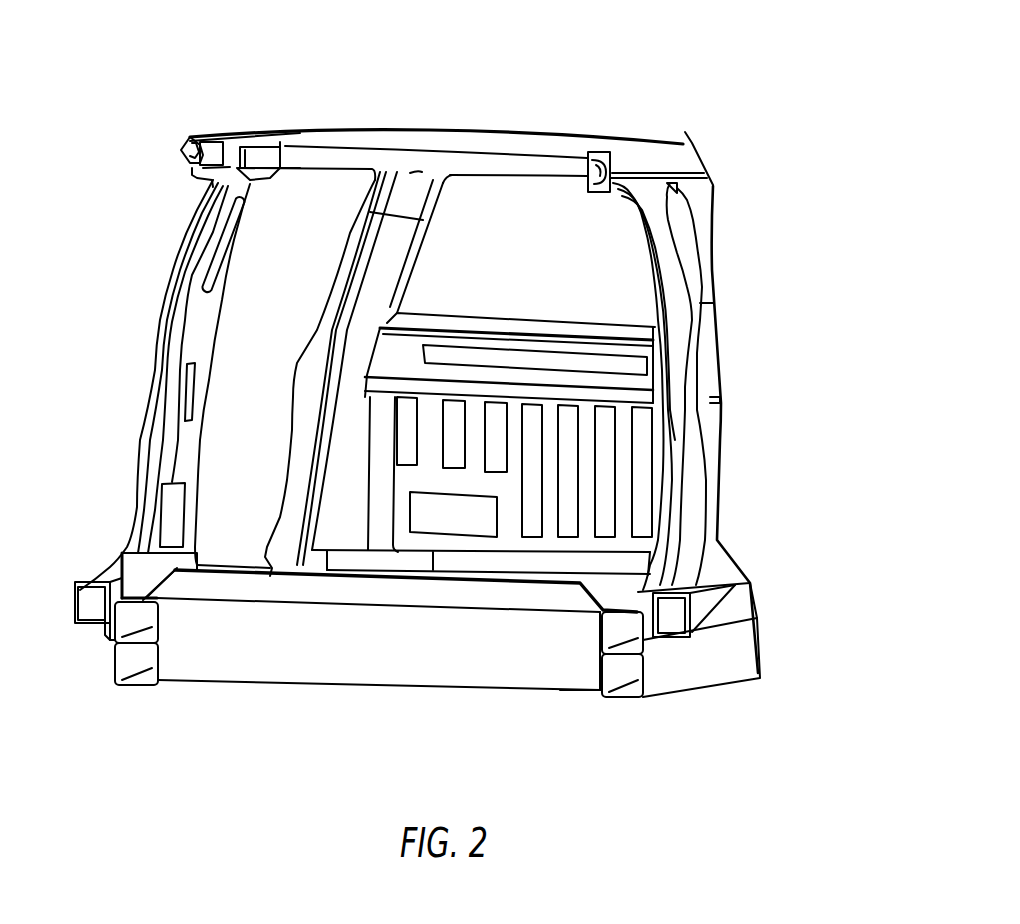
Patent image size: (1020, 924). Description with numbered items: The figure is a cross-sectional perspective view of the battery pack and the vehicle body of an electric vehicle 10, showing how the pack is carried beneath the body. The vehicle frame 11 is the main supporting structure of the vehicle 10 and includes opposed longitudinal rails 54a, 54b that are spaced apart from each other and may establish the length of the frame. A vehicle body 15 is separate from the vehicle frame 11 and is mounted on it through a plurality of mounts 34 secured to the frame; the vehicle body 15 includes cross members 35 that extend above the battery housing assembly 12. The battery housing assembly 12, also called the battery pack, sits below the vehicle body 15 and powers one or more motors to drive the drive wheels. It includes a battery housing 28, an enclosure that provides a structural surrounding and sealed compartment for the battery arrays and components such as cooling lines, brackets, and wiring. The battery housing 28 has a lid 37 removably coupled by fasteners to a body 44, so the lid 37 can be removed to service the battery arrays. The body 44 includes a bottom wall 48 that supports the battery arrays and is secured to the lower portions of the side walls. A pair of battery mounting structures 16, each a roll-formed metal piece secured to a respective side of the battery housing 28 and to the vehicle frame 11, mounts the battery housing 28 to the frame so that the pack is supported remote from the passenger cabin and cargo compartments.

The vehicle 10 is at (742, 83).
The vehicle frame 11 is at (88, 642).
The battery housing assembly 12 is at (437, 625).
The vehicle body 15 is at (135, 418).
The battery mounting structure 16 is at (140, 690).
The battery housing 28 is at (390, 689).
The mount 34 is at (745, 607).
The cross member 35 is at (485, 583).
The lid 37 is at (263, 592).
The body 44 is at (568, 692).
The bottom wall 48 is at (487, 690).
The longitudinal rail 54a is at (92, 590).
The longitudinal rail 54b is at (688, 590).